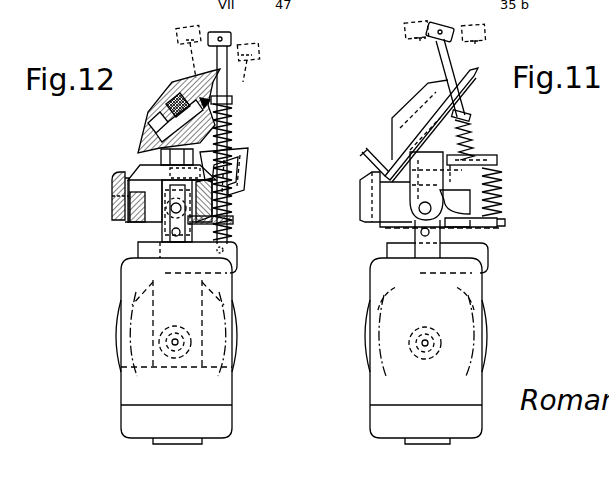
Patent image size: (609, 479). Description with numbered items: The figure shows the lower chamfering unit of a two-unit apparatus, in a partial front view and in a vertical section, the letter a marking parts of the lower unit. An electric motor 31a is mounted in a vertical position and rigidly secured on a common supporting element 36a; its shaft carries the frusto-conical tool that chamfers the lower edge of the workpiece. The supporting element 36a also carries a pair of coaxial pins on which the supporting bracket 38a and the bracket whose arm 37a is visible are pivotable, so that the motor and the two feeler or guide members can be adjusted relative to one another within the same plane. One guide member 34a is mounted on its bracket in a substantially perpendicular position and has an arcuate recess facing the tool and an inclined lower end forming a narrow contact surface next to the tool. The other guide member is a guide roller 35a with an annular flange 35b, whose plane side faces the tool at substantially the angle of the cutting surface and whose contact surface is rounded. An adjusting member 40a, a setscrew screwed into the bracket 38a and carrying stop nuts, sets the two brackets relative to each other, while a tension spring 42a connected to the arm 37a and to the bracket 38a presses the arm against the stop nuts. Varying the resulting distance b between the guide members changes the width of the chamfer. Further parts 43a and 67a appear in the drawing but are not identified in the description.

In FIG. 12, the electric motor 31a is at (222, 392).
In FIG. 11, the electric motor 31a is at (460, 386).
In FIG. 12, the guide member 34a is at (112, 190).
In FIG. 11, the guide member 34a is at (372, 186).
In FIG. 12, the guide roller 35a is at (143, 132).
In FIG. 11, the guide roller 35a is at (412, 112).
In FIG. 11, the annular flange 35b is at (462, 83).
In FIG. 12, the supporting element 36a is at (233, 256).
In FIG. 11, the supporting element 36a is at (485, 256).
In FIG. 11, the arm of bracket 37a is at (380, 226).
In FIG. 12, the supporting bracket 38a is at (240, 158).
In FIG. 11, the supporting bracket 38a is at (476, 150).
In FIG. 11, the adjusting member 40a is at (458, 60).
In FIG. 11, the tension spring 42a is at (504, 186).
In FIG. 12, the adjusting screw with spring 43a is at (227, 88).
In FIG. 11, the shaft 67a is at (430, 342).
In FIG. 11, the distance b is at (370, 155).